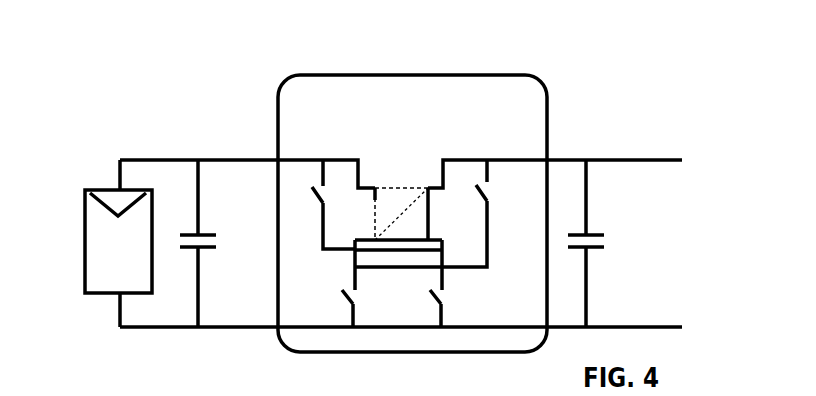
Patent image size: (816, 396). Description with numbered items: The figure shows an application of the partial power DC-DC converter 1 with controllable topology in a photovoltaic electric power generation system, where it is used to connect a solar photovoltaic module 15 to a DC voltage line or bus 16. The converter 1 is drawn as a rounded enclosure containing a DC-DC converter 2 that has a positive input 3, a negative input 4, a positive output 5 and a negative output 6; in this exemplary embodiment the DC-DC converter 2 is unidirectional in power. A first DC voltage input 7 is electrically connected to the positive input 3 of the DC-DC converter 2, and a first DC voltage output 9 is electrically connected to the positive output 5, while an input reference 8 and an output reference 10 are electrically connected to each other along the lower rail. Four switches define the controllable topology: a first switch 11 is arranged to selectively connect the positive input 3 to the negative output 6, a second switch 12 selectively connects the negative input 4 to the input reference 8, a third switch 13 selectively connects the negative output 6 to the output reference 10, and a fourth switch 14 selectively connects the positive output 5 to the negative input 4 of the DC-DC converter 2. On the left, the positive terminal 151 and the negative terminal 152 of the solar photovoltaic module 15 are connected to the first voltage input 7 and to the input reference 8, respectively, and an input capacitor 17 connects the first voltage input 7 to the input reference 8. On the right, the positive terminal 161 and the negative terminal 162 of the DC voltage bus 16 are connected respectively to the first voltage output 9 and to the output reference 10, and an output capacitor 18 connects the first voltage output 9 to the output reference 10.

The partial power DC-DC converter 1 is at (394, 50).
The DC-DC converter 2 is at (404, 187).
The positive input 3 is at (371, 187).
The negative input 4 is at (374, 239).
The positive output 5 is at (434, 187).
The negative output 6 is at (430, 239).
The first DC voltage input 7 is at (226, 159).
The input reference 8 is at (223, 326).
The first DC voltage output 9 is at (571, 159).
The output reference 10 is at (549, 327).
The first switch 11 is at (318, 203).
The second switch 12 is at (346, 301).
The third switch 13 is at (447, 301).
The fourth switch 14 is at (489, 202).
The solar photovoltaic module 15 is at (96, 189).
The DC voltage bus 16 is at (702, 223).
The input capacitor 17 is at (211, 234).
The output capacitor 18 is at (599, 235).
The positive terminal 151 is at (146, 159).
The negative terminal 152 is at (136, 328).
The positive terminal 161 is at (623, 159).
The negative terminal 162 is at (638, 327).